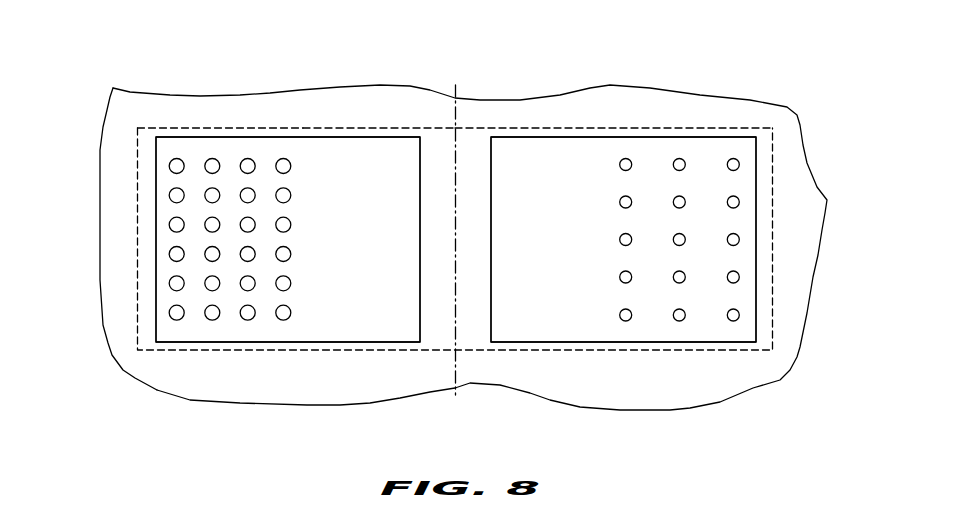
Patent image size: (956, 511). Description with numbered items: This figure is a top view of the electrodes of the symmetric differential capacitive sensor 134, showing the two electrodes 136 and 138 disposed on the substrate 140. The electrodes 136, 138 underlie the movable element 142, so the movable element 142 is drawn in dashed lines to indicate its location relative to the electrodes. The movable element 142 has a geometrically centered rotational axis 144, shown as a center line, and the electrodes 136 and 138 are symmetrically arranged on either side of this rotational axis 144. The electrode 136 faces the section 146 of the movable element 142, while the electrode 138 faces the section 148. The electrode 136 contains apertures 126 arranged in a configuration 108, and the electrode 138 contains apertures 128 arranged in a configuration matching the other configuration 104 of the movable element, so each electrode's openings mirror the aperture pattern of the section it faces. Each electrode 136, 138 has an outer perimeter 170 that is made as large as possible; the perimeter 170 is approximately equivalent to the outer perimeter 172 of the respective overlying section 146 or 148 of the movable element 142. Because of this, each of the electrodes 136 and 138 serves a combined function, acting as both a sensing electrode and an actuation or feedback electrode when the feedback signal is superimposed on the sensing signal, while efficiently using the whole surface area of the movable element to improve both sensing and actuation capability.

The configuration 104 is at (755, 316).
The configuration 108 is at (158, 317).
The apertures 126 is at (172, 222).
The apertures 128 is at (739, 163).
The symmetric differential capacitive sensor 134 is at (765, 480).
The electrode 136 is at (257, 328).
The electrode 138 is at (583, 327).
The substrate 140 is at (112, 313).
The movable element 142 is at (213, 127).
The rotational axis 144 is at (459, 110).
The section 146 is at (303, 127).
The section 148 is at (578, 127).
The outer perimeter 170 is at (369, 137).
The outer perimeter 172 is at (317, 127).